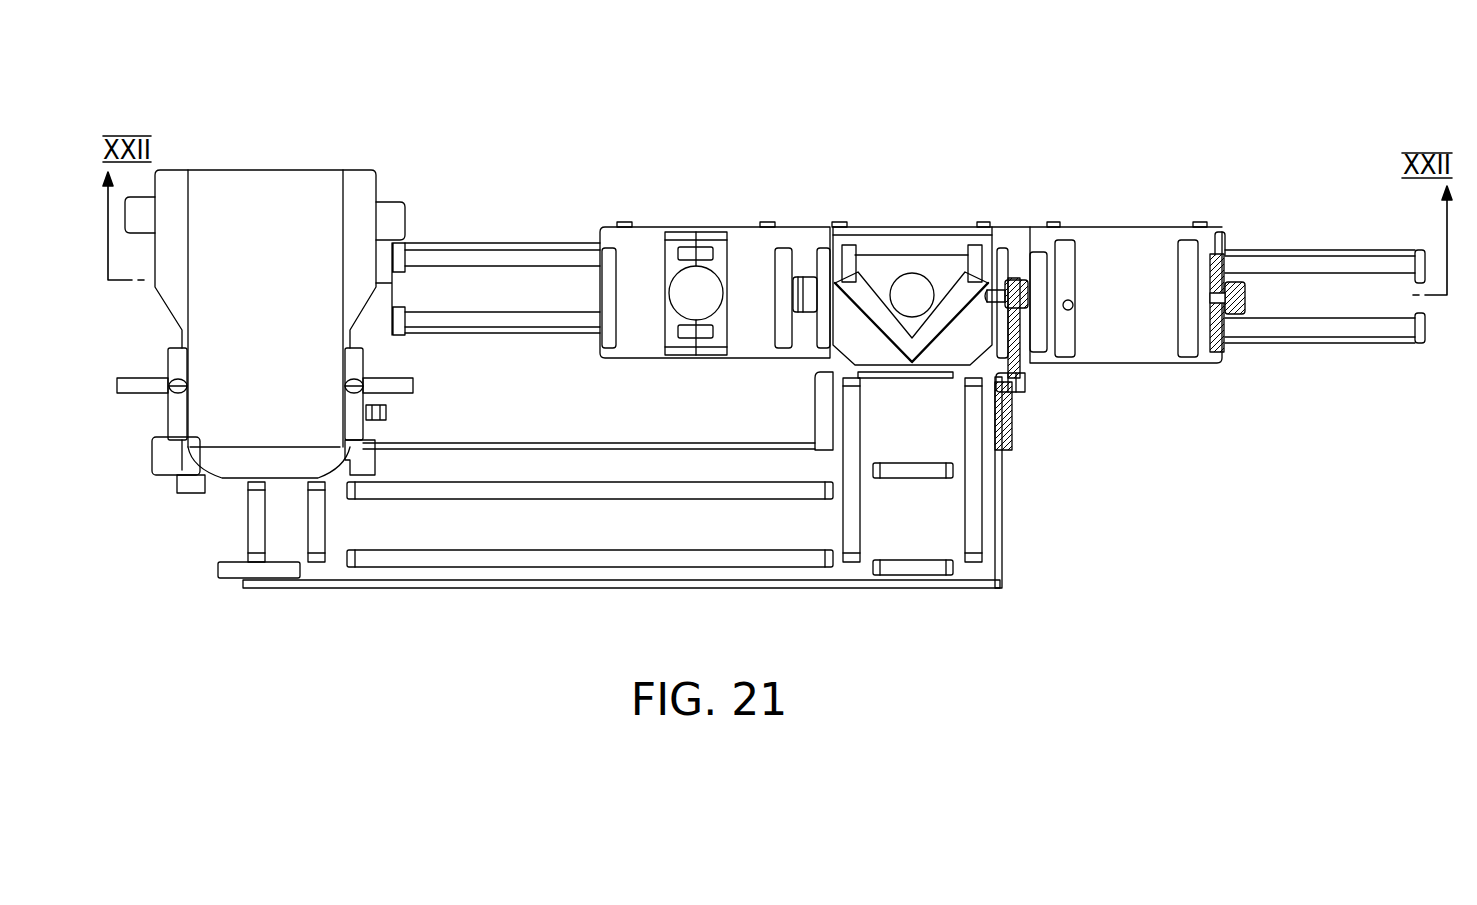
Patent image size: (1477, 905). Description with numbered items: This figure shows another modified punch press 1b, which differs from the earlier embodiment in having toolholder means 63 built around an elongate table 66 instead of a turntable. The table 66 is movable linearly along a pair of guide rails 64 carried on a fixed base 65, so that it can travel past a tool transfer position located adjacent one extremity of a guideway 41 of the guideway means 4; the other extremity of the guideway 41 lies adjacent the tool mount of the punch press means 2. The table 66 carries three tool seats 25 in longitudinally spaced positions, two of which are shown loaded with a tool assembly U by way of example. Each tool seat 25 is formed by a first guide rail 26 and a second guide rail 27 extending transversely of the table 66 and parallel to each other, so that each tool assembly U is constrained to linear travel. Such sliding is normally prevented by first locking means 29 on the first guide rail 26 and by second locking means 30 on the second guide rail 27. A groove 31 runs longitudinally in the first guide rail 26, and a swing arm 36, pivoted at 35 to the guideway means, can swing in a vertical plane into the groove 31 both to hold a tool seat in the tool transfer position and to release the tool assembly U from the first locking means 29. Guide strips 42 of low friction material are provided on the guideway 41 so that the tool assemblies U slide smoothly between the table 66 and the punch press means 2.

The modified punch press 1b is at (1012, 120).
The punch press means 2 is at (290, 185).
The guideway means 4 is at (627, 596).
The tool seat 25 is at (628, 200).
The first guide rail 26 is at (785, 250).
The second guide rail 27 is at (605, 255).
The first locking means 29 is at (1250, 298).
The second locking means 30 is at (1073, 305).
The groove 31 is at (1232, 315).
The pivot 35 is at (1015, 393).
The swing arm 36 is at (1020, 356).
The guideway 41 is at (795, 577).
The guide strips 42 is at (975, 511).
The toolholder means 63 is at (1172, 180).
The guide rails 64 is at (1345, 268).
The fixed base 65 is at (1375, 305).
The elongate table 66 is at (1140, 345).
The tool assembly U is at (655, 245).